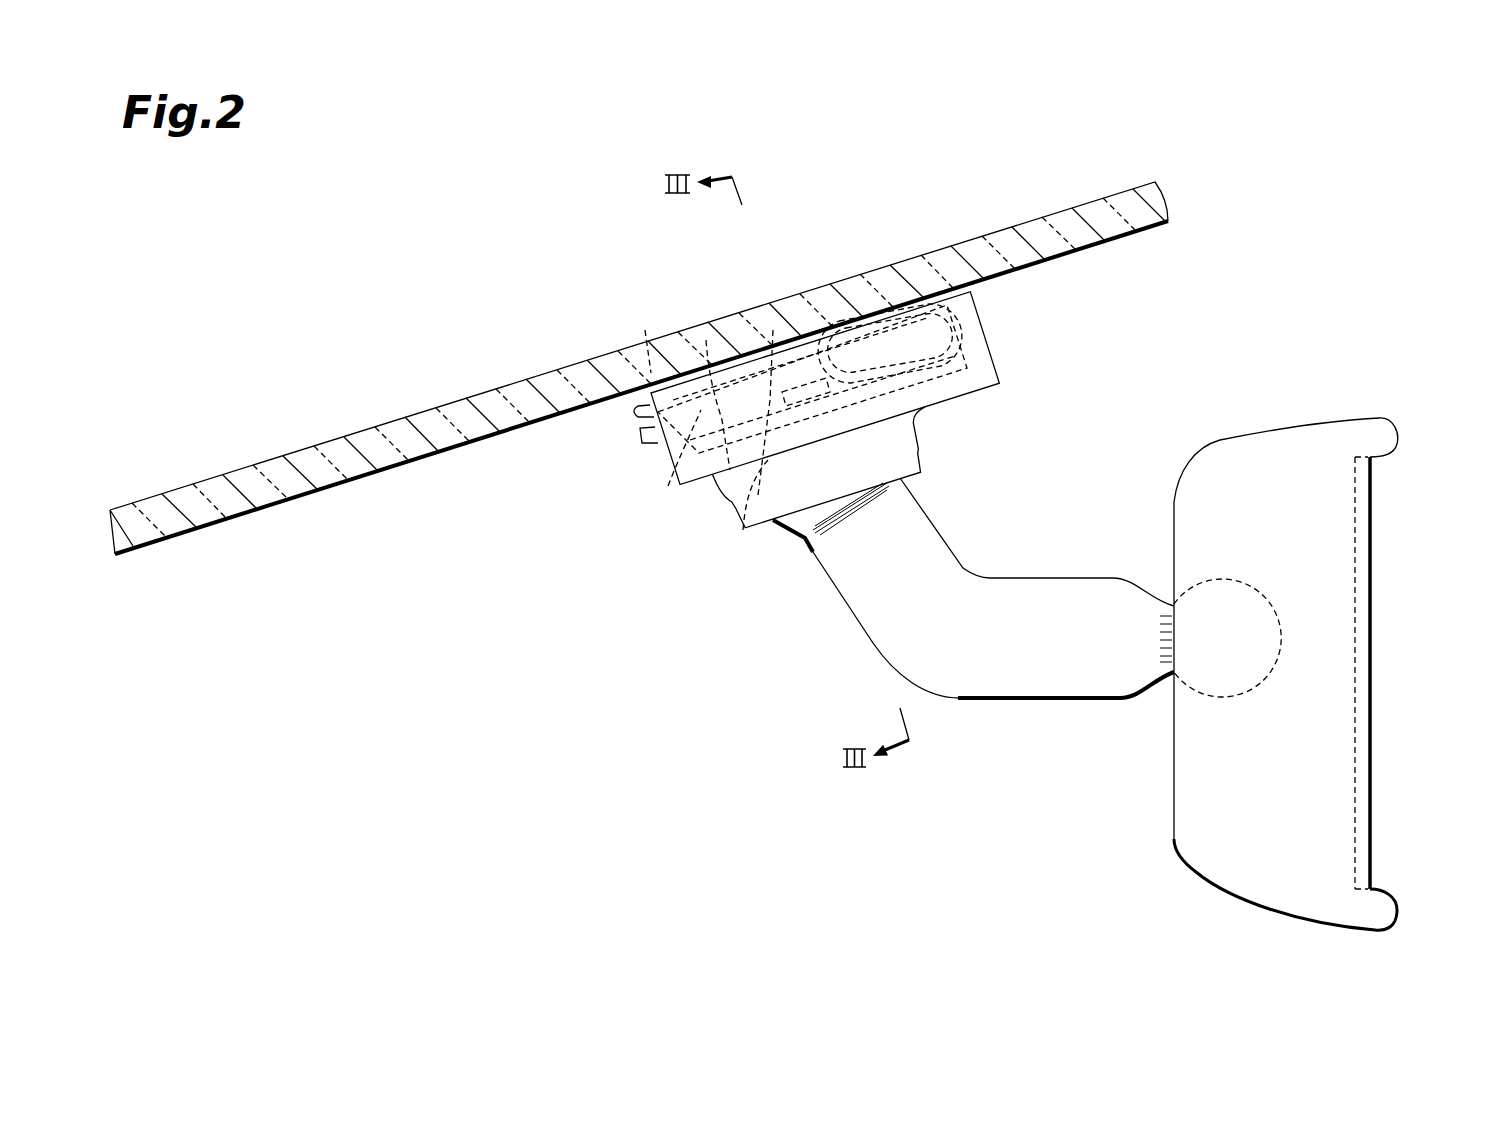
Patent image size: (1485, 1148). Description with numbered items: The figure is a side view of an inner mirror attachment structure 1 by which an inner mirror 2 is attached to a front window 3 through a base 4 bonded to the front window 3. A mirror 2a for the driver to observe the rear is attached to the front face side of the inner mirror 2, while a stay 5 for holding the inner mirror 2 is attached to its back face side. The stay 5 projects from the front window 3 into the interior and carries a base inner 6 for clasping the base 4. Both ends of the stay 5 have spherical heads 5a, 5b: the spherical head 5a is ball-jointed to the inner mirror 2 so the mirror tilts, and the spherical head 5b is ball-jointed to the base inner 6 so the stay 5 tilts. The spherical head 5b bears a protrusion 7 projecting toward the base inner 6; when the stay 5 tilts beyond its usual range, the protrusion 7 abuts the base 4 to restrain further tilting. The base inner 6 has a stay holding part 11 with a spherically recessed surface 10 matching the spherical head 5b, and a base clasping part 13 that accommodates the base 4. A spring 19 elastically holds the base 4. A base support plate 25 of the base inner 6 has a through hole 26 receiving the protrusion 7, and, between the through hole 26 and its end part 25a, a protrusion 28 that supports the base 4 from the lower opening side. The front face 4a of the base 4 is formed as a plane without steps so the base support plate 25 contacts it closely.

The inner mirror attachment structure 1 is at (620, 758).
The inner mirror 2 is at (1300, 412).
The mirror 2a is at (1355, 616).
The front window 3 is at (266, 524).
The base 4 is at (835, 325).
The front face 4a is at (668, 486).
The stay 5 is at (1043, 708).
The spherical head 5a is at (1226, 695).
The spherical head 5b is at (743, 530).
The base inner 6 is at (1008, 378).
The protrusion 7 is at (852, 336).
The spherically recessed surface 10 is at (880, 487).
The stay holding part 11 is at (924, 442).
The base clasping part 13 is at (982, 322).
The spring 19 is at (637, 404).
The base support plate 25 is at (706, 340).
The end part 25a is at (641, 436).
The through hole 26 is at (773, 330).
The protrusion 28 is at (645, 330).